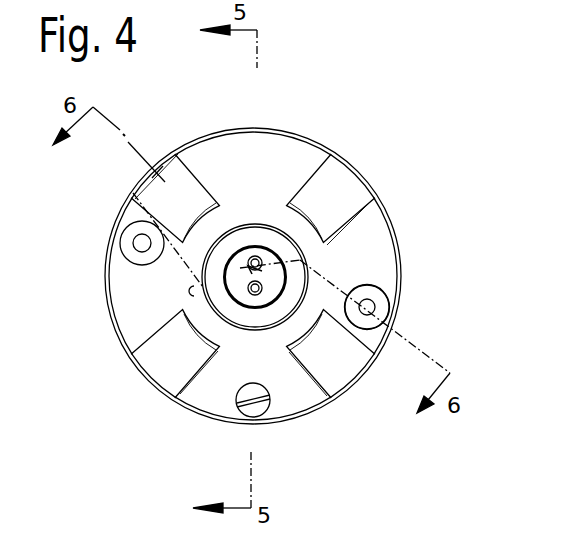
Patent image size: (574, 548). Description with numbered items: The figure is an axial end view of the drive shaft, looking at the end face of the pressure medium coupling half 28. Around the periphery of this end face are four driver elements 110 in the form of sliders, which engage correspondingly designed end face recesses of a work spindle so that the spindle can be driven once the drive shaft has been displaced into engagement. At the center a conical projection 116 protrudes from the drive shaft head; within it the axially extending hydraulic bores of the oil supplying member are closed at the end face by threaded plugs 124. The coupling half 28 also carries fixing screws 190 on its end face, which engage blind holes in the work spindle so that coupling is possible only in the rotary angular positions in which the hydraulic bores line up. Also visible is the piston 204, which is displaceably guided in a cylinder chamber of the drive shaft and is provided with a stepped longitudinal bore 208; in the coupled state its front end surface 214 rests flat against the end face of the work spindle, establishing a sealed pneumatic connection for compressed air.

The pressure medium coupling half 28 is at (387, 210).
The driver elements 110 is at (345, 182).
The conical projection 116 is at (257, 105).
The threaded plugs 124 is at (254, 256).
The fixing screws 190 is at (255, 408).
The piston 204 is at (389, 302).
The stepped longitudinal bore 208 is at (373, 311).
The front end surface 214 is at (368, 292).